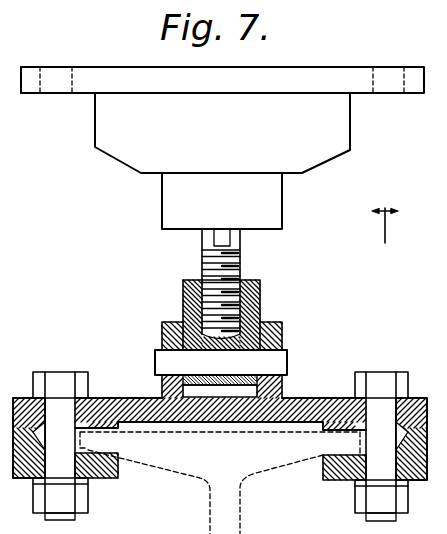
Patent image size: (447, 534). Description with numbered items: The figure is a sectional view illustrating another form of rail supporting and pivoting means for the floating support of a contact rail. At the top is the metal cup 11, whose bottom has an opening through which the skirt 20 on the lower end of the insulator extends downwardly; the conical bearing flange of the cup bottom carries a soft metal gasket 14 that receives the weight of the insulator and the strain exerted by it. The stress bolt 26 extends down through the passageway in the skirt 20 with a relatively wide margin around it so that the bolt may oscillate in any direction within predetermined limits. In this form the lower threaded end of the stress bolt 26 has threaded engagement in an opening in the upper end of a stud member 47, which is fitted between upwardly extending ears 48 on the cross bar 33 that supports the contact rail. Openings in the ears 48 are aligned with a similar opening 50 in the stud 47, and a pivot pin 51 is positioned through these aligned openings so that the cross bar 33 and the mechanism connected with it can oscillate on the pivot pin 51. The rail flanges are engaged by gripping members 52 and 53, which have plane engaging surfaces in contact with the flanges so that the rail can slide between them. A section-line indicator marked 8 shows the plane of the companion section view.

The metal cup 11 is at (342, 143).
The skirt 20 is at (273, 212).
The stress bolt 26 is at (210, 253).
The stud member 47 is at (183, 292).
The ears 48 is at (168, 325).
The opening 50 is at (254, 327).
The gasket 14 is at (283, 341).
The pivot pin 51 is at (160, 355).
The cross bar 33 is at (300, 400).
The gripping member 52 is at (330, 433).
The gripping member 53 is at (312, 457).
The section line 8 is at (385, 217).